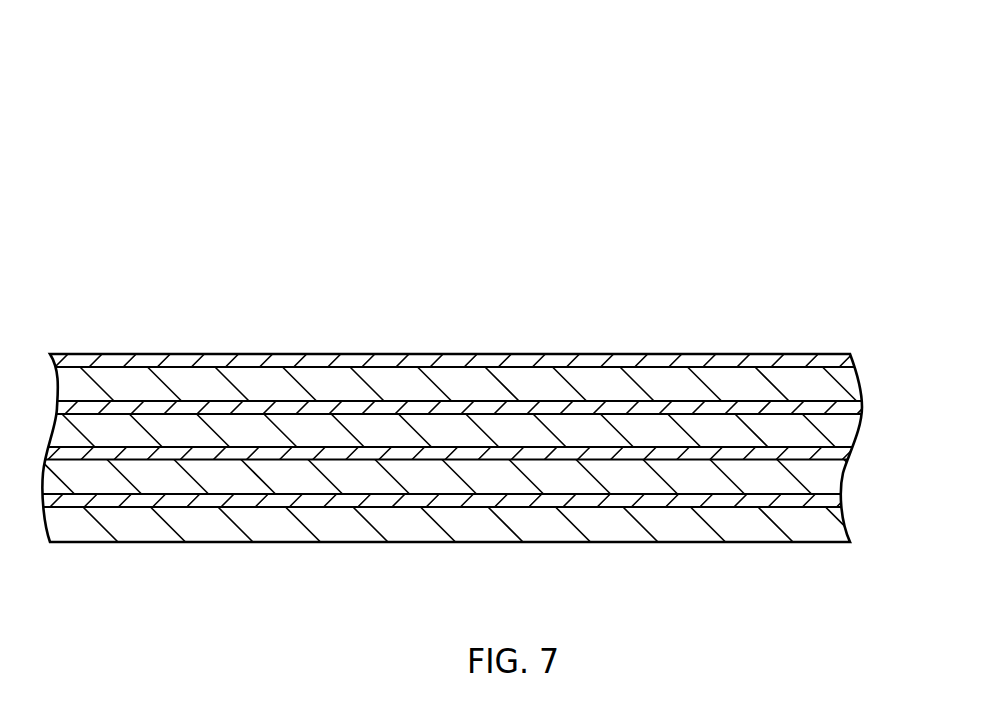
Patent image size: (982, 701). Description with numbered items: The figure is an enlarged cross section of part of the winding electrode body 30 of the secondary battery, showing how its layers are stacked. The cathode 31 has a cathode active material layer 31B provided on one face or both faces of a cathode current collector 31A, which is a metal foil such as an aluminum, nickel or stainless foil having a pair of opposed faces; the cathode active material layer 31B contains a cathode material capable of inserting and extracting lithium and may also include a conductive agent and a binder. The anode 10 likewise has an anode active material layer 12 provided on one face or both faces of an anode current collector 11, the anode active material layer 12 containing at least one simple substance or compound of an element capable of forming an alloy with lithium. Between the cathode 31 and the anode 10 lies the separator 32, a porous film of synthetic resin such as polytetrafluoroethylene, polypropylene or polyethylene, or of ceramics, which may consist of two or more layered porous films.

The winding electrode body 30 is at (789, 134).
The cathode 31 is at (323, 253).
The cathode current collector 31A is at (82, 395).
The cathode active material layer 31B is at (312, 377).
The anode 10 is at (455, 253).
The anode current collector 11 is at (482, 503).
The anode active material layer 12 is at (718, 473).
The separator 32 is at (832, 363).